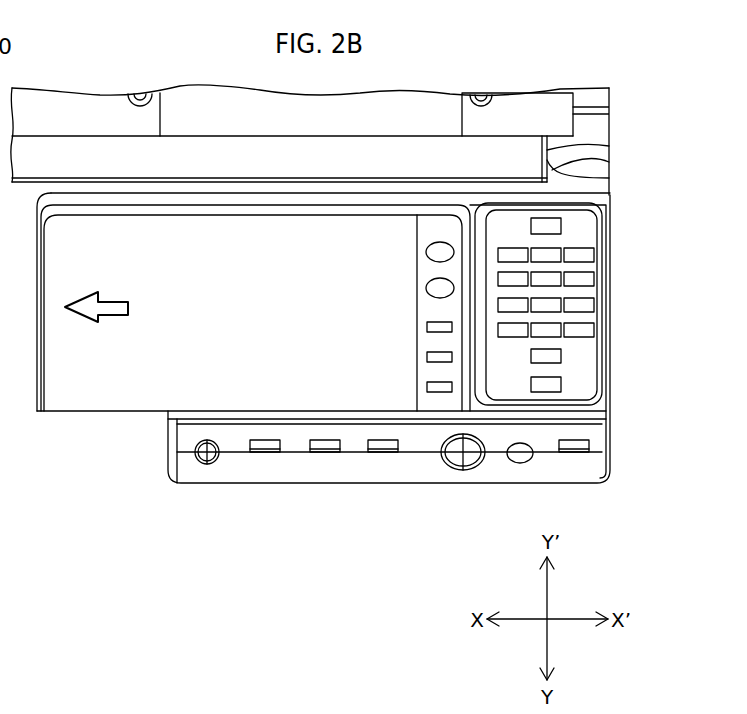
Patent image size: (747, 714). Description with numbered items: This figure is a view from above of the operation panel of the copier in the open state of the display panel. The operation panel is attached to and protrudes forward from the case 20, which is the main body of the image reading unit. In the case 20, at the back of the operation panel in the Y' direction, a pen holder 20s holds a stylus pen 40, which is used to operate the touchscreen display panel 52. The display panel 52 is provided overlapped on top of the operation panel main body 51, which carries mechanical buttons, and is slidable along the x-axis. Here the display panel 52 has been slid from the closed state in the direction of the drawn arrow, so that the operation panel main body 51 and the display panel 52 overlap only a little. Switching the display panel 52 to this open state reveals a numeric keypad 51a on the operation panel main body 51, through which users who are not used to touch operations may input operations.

The case 20 is at (597, 124).
The pen holder 20s is at (483, 150).
The stylus pen 40 is at (588, 170).
The operation panel main body 51 is at (603, 442).
The numeric keypad 51a is at (633, 208).
The display panel 52 is at (95, 393).